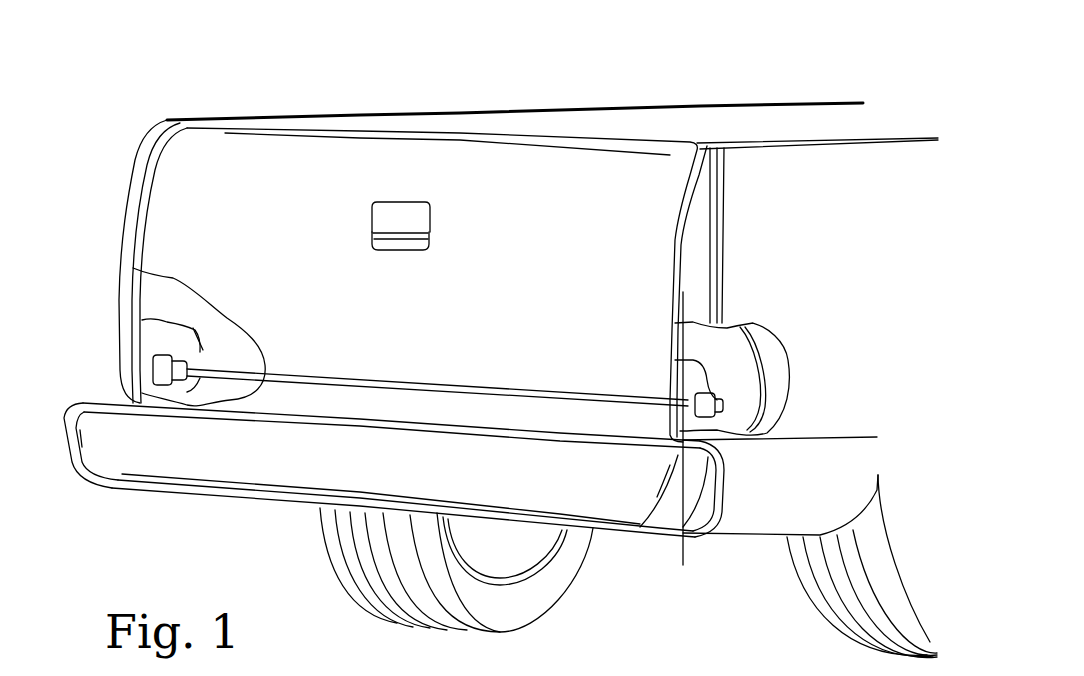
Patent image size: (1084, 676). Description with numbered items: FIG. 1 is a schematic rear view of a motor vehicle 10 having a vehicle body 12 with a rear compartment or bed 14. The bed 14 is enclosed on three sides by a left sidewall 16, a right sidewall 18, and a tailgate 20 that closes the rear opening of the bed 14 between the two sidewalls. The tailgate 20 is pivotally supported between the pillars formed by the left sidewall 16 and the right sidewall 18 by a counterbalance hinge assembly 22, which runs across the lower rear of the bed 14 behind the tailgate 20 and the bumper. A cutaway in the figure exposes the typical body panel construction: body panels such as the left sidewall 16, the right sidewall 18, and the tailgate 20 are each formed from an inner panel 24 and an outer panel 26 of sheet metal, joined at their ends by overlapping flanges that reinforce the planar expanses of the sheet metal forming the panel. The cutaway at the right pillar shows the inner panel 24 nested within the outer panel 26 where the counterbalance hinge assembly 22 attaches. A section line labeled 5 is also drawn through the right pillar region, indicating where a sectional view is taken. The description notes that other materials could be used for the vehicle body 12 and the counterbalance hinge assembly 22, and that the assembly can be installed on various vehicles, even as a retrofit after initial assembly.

The motor vehicle 10 is at (257, 82).
The vehicle body 12 is at (110, 207).
The bed 14 is at (618, 132).
The left sidewall 16 is at (470, 112).
The right sidewall 18 is at (785, 143).
The tailgate 20 is at (620, 255).
The counterbalance hinge assembly 22 is at (204, 352).
The inner panel 24 is at (763, 373).
The outer panel 26 is at (773, 337).
The section line 5- 5 is at (745, 565).